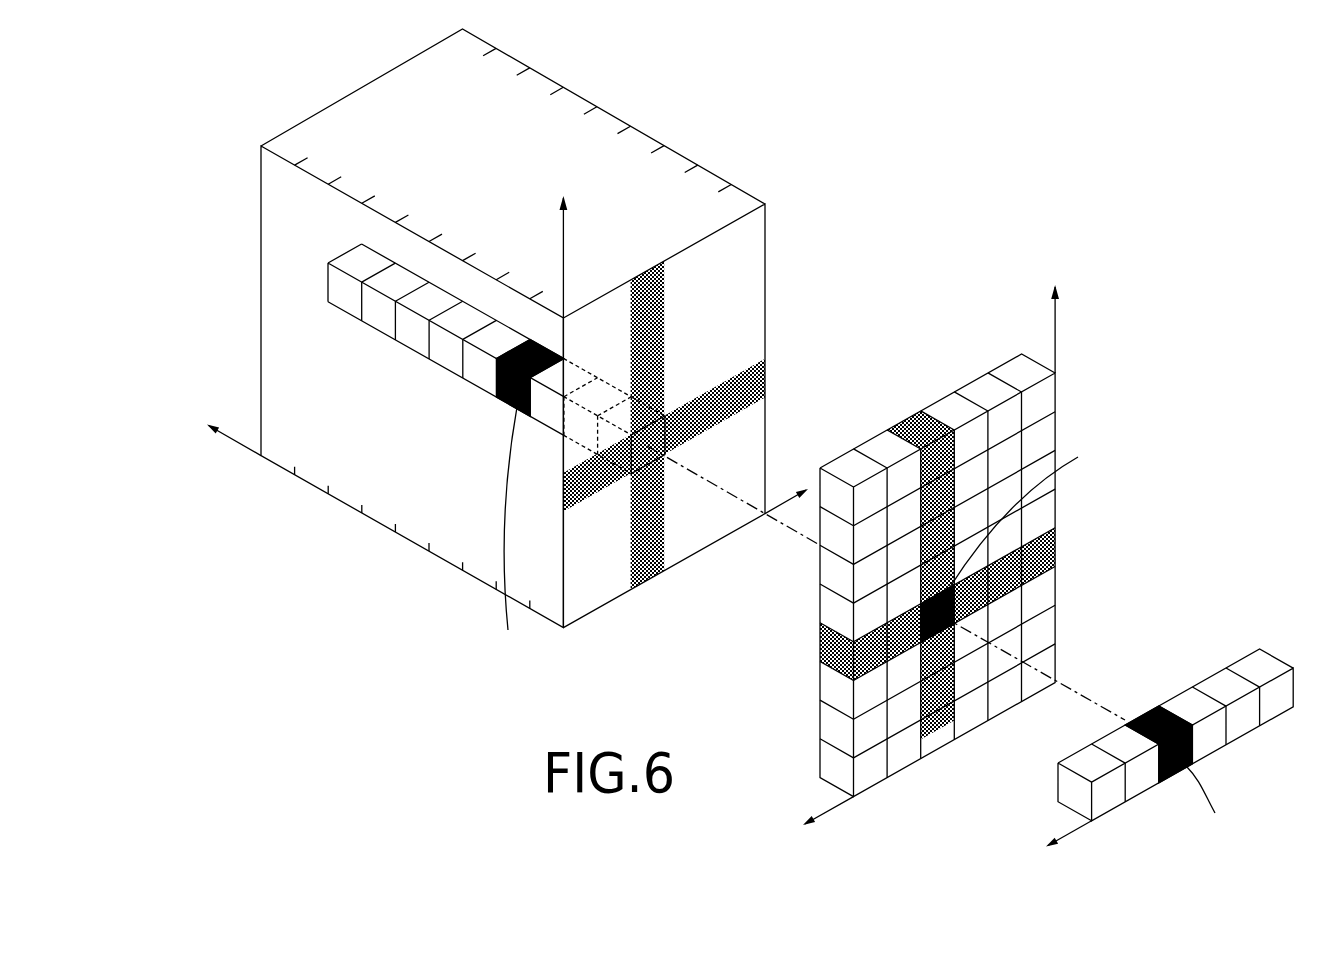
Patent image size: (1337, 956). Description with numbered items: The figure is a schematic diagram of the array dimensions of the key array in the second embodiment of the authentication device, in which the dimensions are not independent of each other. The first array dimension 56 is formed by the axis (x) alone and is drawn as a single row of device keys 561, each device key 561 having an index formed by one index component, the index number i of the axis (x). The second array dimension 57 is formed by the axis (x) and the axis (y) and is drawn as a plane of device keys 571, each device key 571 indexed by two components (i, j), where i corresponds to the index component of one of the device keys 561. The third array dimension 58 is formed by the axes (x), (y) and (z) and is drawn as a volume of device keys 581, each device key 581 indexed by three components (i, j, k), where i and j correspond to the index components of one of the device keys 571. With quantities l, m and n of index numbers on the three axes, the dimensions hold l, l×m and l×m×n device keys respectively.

The third array dimension 58 is at (767, 260).
The device keys 581 is at (505, 403).
The second array dimension 57 is at (1057, 430).
The device keys 571 is at (1005, 457).
The first array dimension 56 is at (1276, 650).
The device keys 561 is at (1257, 667).